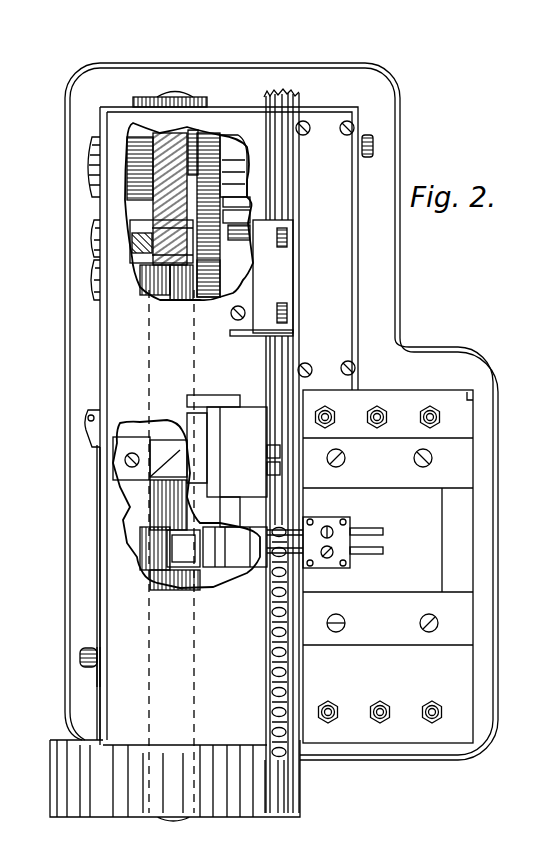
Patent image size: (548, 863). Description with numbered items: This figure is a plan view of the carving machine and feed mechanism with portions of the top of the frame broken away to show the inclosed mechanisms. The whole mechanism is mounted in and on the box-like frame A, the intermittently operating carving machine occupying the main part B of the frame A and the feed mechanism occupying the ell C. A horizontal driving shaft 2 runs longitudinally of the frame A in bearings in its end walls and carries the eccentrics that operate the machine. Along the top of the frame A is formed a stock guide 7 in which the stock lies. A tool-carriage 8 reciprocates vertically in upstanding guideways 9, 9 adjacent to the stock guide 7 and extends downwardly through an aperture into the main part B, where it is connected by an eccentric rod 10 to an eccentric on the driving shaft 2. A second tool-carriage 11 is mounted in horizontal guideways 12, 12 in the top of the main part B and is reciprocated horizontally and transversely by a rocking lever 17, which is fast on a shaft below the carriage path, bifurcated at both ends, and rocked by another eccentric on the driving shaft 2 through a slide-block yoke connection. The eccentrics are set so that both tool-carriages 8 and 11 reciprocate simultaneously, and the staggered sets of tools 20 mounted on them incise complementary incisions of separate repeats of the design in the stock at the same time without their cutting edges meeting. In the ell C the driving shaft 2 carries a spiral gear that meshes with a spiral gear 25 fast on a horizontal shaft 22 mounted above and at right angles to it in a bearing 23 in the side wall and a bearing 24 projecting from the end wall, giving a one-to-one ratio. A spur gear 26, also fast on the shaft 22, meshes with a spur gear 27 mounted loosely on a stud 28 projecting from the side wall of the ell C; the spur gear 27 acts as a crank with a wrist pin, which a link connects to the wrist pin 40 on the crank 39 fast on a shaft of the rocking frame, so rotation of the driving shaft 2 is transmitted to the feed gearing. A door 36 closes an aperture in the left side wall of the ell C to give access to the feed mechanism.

The driving shaft 2 is at (173, 493).
The stock guide 7 is at (268, 655).
The tool-carriage 8 is at (227, 467).
The vertical guideways 9 is at (207, 402).
The eccentric rod 10 is at (177, 458).
The tool-carriage 11 is at (365, 542).
The horizontal guideways 12 is at (455, 460).
The rocking lever 17 is at (248, 548).
The tools 20 is at (267, 450).
The horizontal shaft 22 is at (197, 148).
The bearing 23 is at (88, 170).
The bearing 24 is at (232, 160).
The spiral gear 25 is at (167, 147).
The spur gear 26 is at (210, 157).
The spur gear 27 is at (213, 280).
The stud 28 is at (188, 267).
The door 36 is at (98, 587).
The crank 39 is at (247, 195).
The wrist pin 40 is at (248, 212).
The frame A is at (32, 197).
The main part of the frame B is at (127, 355).
The ell of the frame C is at (410, 745).